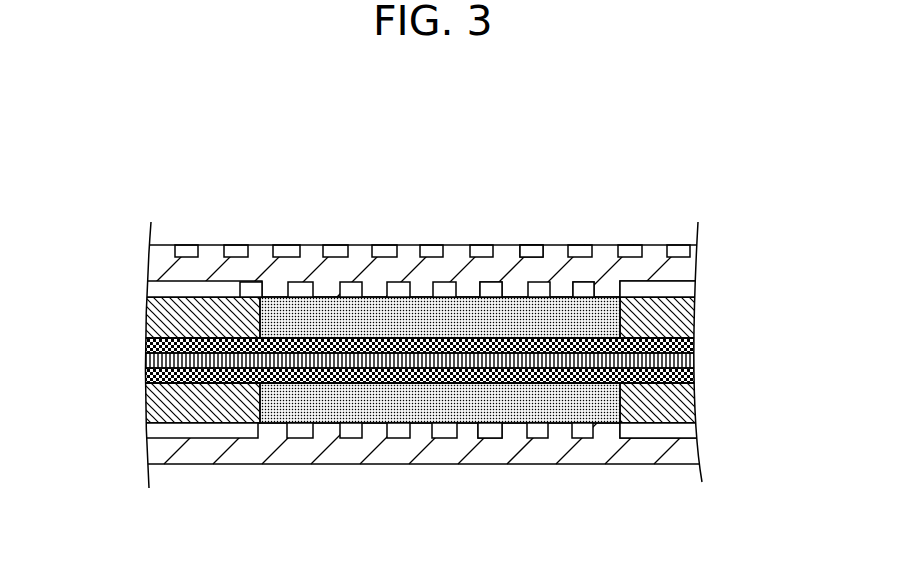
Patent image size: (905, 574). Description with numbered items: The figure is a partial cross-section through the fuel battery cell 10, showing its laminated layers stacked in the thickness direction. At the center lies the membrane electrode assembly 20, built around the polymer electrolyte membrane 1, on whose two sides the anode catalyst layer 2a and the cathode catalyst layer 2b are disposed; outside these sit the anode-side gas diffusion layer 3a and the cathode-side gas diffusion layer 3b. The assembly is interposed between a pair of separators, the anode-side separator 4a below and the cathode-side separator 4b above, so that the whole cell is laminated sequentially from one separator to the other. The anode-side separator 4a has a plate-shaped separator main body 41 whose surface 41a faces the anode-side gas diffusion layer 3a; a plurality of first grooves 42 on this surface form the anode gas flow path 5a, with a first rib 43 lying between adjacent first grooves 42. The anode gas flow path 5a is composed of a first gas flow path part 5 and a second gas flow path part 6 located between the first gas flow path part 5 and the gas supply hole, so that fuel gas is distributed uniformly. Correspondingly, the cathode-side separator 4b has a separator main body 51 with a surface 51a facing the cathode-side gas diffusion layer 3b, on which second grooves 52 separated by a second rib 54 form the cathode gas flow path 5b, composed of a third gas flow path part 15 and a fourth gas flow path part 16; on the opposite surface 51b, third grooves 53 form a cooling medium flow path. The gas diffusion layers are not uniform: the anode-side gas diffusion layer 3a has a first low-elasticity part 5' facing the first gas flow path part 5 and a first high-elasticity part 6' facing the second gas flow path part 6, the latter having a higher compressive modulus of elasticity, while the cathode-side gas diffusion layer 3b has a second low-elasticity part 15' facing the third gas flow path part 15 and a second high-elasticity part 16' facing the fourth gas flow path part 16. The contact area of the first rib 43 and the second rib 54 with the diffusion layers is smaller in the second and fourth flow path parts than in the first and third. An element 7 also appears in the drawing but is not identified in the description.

The fuel battery cell 10 is at (119, 173).
The top surface of outer insulating layer 7 is at (183, 244).
The cathode-side separator 4b is at (157, 253).
The anode-side separator 4a is at (158, 447).
The cathode-side gas diffusion layer 3b is at (160, 318).
The anode-side gas diffusion layer 3a is at (157, 402).
The cathode catalyst layer 2b is at (153, 343).
The anode catalyst layer 2a is at (153, 375).
The polymer electrolyte membrane 1 is at (157, 362).
The membrane electrode assembly 20 is at (435, 351).
The fourth gas flow path part 16 is at (425, 232).
The second high-elasticity part 16' is at (461, 255).
The third grooves 53 is at (284, 251).
The second rib 54 is at (325, 288).
The third gas flow path part 15 is at (452, 232).
The second low-elasticity part 15' is at (440, 253).
The separator main body 51 is at (443, 277).
The surface of separator main body 51a is at (682, 283).
The surface of separator main body 51b is at (527, 253).
The cathode gas flow path 5b is at (583, 286).
The second gas flow path part 6 is at (425, 482).
The first high-elasticity part 6' is at (455, 462).
The first gas flow path part 5 is at (466, 482).
The anode gas flow path 5a is at (297, 430).
The first low-elasticity part 5' is at (440, 462).
The separator main body 41 is at (310, 450).
The surface of separator main body 41a is at (677, 440).
The first grooves 42 is at (400, 438).
The first rib 43 is at (515, 433).
The second grooves 52 is at (488, 287).